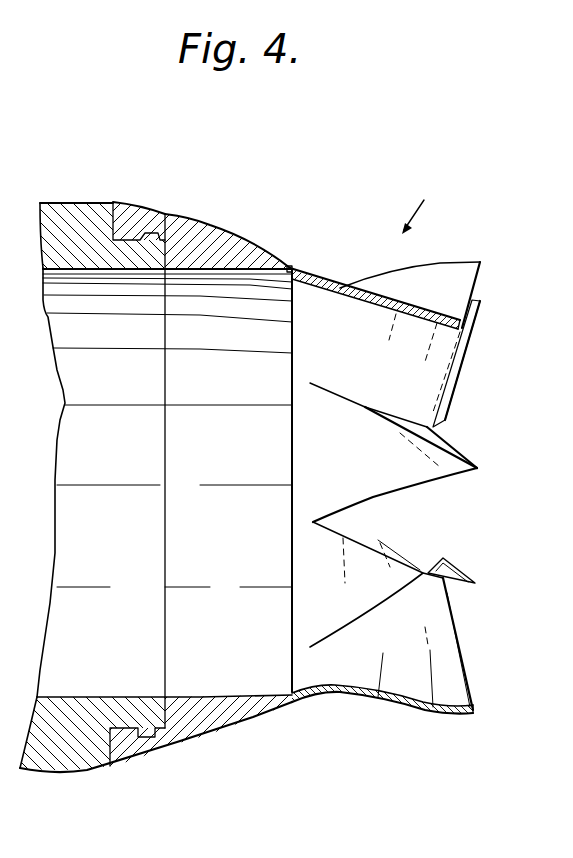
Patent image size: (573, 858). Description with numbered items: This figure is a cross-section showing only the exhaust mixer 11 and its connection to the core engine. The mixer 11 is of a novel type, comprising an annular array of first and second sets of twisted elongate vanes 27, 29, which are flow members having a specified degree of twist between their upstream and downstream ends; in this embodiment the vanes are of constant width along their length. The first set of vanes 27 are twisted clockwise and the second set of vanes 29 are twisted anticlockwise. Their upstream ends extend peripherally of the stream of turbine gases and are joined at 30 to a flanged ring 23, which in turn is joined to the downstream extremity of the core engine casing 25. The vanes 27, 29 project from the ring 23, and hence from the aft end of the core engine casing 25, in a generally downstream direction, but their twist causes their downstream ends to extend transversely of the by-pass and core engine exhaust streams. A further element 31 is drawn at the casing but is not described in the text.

The flanged ring 23 is at (186, 217).
The core engine casing 25 is at (74, 203).
The retaining ring 31 is at (114, 203).
The joint 30 is at (291, 266).
The second set of twisted elongate vanes 29 is at (483, 262).
The first set of twisted elongate vanes 27 is at (470, 356).
The exhaust mixer 11 is at (429, 210).